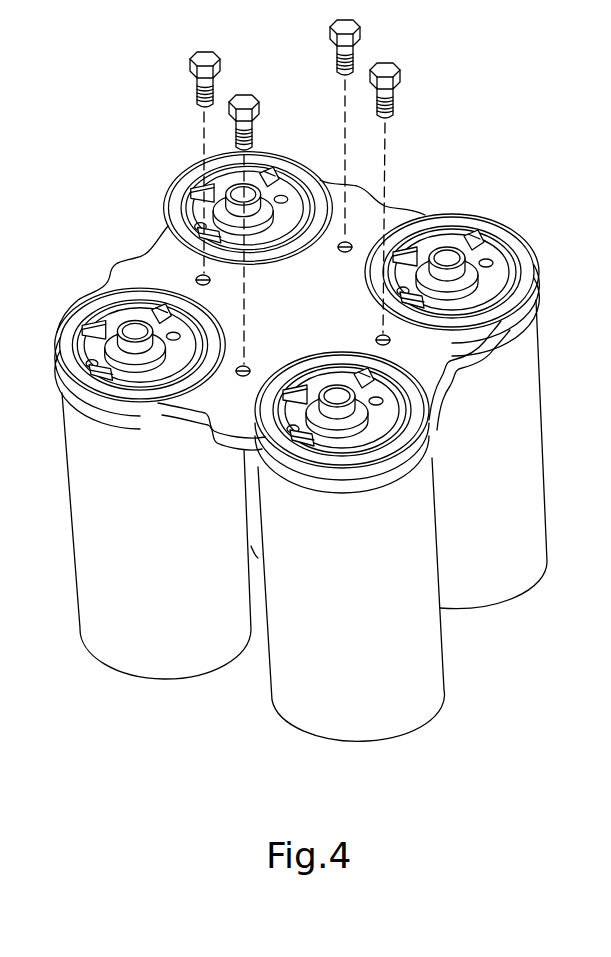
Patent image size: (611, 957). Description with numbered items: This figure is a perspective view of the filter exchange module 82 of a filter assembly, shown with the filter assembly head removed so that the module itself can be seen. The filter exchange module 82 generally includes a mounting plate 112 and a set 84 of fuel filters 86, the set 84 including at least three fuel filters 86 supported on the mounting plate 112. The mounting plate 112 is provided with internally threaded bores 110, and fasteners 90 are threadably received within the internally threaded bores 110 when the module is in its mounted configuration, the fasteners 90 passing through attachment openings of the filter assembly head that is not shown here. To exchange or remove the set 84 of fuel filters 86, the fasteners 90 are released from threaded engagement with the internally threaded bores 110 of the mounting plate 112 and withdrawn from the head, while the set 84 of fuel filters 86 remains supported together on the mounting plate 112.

The filter exchange module 82 is at (324, 284).
The set of fuel filters 84 is at (314, 447).
The fuel filter 86 is at (80, 600).
The fastener 90 is at (220, 62).
The internally threaded bore 110 is at (198, 273).
The mounting plate 112 is at (515, 328).